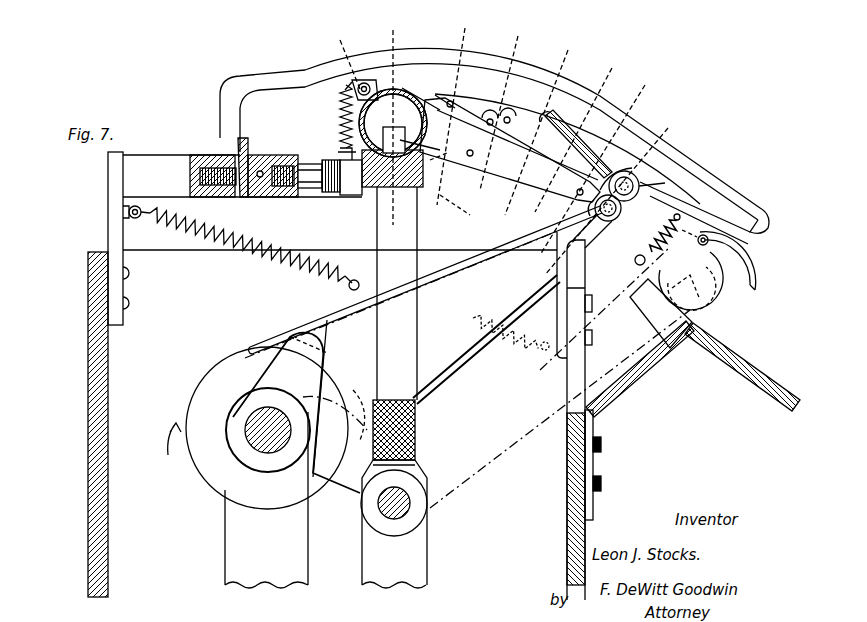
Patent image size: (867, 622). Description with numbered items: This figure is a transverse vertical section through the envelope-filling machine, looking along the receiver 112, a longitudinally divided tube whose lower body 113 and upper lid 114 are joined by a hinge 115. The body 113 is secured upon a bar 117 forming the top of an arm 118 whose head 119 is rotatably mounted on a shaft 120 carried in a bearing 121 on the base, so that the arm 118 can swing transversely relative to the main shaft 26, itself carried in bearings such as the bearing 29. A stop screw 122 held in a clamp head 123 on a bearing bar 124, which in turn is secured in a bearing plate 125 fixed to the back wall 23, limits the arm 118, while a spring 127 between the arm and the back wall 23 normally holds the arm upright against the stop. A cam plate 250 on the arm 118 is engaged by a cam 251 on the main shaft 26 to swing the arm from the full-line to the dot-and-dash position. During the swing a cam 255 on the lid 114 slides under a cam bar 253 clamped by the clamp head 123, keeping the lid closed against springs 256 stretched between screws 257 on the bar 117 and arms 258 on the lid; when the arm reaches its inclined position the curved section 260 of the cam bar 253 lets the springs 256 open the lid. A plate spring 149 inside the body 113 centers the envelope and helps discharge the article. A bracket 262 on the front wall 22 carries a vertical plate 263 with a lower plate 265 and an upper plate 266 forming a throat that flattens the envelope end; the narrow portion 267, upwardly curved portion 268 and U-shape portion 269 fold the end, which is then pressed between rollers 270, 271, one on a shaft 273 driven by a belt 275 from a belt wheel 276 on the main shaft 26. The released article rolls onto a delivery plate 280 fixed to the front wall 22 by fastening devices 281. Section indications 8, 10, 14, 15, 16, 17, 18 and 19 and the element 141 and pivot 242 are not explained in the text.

The section line 8- 8 is at (268, 120).
The section line 10- 10 is at (388, 32).
The section line 14- 14 is at (470, 26).
The section line 15- 15 is at (528, 36).
The section line 16- 16 is at (573, 48).
The section line 17- 17 is at (615, 68).
The section line 18- 18 is at (648, 85).
The section line 19- 19 is at (675, 130).
The front wall 22 is at (567, 495).
The back wall 23 is at (88, 280).
The main shaft 26 is at (262, 428).
The bearing 29 is at (228, 538).
The receiver 112 is at (405, 88).
The body 113 is at (697, 311).
The lid 114 is at (425, 113).
The hinge 115 is at (364, 84).
The bar 117 is at (376, 192).
The arm 118 is at (410, 308).
The head 119 is at (428, 512).
The shaft 120 is at (400, 508).
The bearing 121 is at (430, 576).
The stop screw 122 is at (312, 198).
The clamp head 123 is at (262, 160).
The bearing bar 124 is at (162, 168).
The bearing plate 125 is at (108, 210).
The spring 127 is at (215, 230).
The rod block 141 is at (405, 445).
The plate spring 149 is at (383, 140).
The pivot pin 242 is at (634, 195).
The cam plate 250 is at (318, 340).
The cam 251 is at (305, 342).
The cam bar 253 is at (280, 74).
The cam 255 is at (428, 88).
The springs 256 is at (340, 108).
The screws 257 is at (342, 155).
The arms 258 is at (676, 220).
The curved section 260 is at (740, 207).
The bracket 262 is at (680, 135).
The vertical plate 263 is at (642, 160).
The lower plate 265 is at (468, 184).
The upper plate 266 is at (475, 92).
The narrow portion 267 is at (536, 100).
The upwardly curved portion 268 is at (575, 124).
The U-shape portion 269 is at (606, 130).
The roller 270 is at (618, 222).
The roller 271 is at (690, 170).
The shaft 273 is at (692, 180).
The belt 275 is at (265, 340).
The belt wheel 276 is at (220, 368).
The delivery plate 280 is at (765, 385).
The fastening devices 281 is at (603, 448).